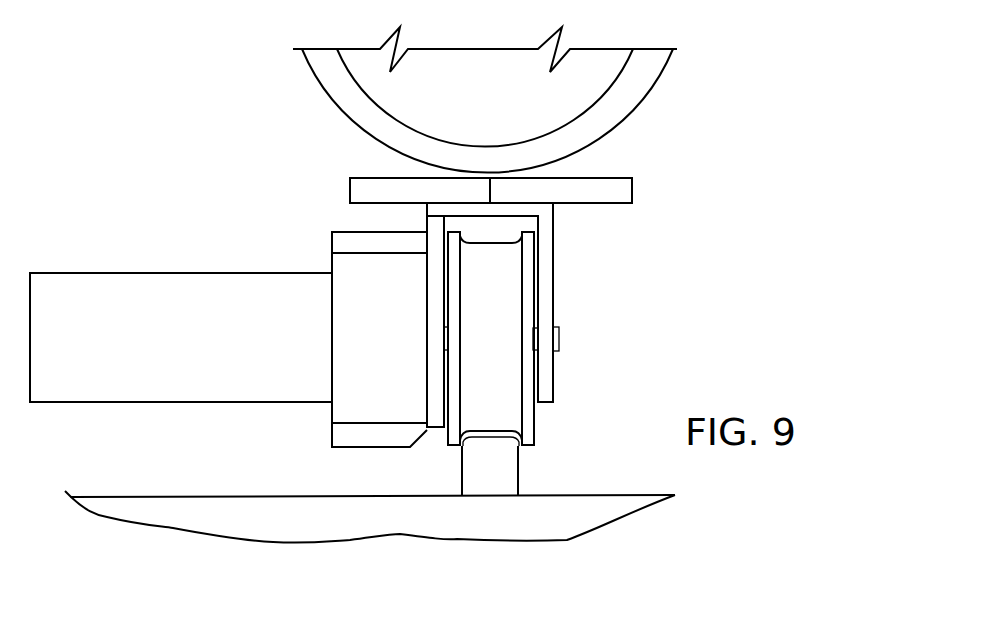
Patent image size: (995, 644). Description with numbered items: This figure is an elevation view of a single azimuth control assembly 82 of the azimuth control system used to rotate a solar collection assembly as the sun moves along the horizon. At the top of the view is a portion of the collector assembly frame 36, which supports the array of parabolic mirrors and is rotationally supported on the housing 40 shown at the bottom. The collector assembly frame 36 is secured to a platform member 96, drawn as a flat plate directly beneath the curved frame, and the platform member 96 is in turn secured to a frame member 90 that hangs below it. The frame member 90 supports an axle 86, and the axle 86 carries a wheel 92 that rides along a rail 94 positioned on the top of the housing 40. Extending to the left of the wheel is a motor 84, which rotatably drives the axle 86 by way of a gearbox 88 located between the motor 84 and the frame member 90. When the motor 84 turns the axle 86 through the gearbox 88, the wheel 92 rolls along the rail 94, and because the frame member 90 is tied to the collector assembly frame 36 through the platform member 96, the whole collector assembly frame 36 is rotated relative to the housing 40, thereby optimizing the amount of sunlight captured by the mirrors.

The collector assembly frame 36 is at (628, 101).
The platform member 96 is at (633, 200).
The frame member 90 is at (554, 208).
The wheel 92 is at (547, 421).
The rail 94 is at (488, 478).
The axle 86 is at (560, 340).
The azimuth control assembly 82 is at (181, 335).
The motor 84 is at (137, 403).
The gearbox 88 is at (333, 449).
The housing 40 is at (197, 517).